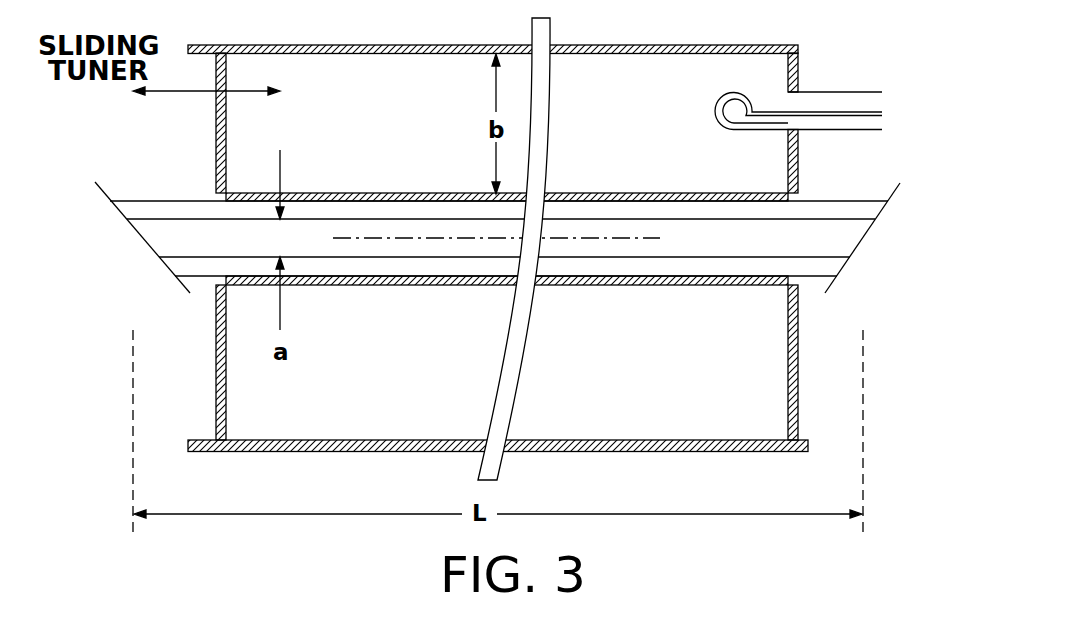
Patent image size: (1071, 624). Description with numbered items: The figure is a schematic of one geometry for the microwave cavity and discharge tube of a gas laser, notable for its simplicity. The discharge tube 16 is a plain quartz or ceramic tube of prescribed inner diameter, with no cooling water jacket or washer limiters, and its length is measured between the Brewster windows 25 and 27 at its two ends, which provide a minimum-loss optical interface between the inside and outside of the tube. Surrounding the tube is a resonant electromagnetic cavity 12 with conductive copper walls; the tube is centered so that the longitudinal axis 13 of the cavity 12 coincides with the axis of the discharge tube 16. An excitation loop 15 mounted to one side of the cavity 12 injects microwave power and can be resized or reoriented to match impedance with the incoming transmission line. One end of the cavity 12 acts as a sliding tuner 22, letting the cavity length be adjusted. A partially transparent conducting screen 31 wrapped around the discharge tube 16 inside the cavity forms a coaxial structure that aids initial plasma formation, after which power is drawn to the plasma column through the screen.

The resonant electromagnetic cavity 12 is at (644, 54).
The longitudinal axis 13 is at (620, 199).
The excitation loop 15 is at (716, 106).
The discharge tube 16 is at (688, 203).
The sliding tuner 22 is at (226, 128).
The Brewster window 25 is at (168, 272).
The Brewster window 27 is at (853, 253).
The conducting screen 31 is at (390, 193).